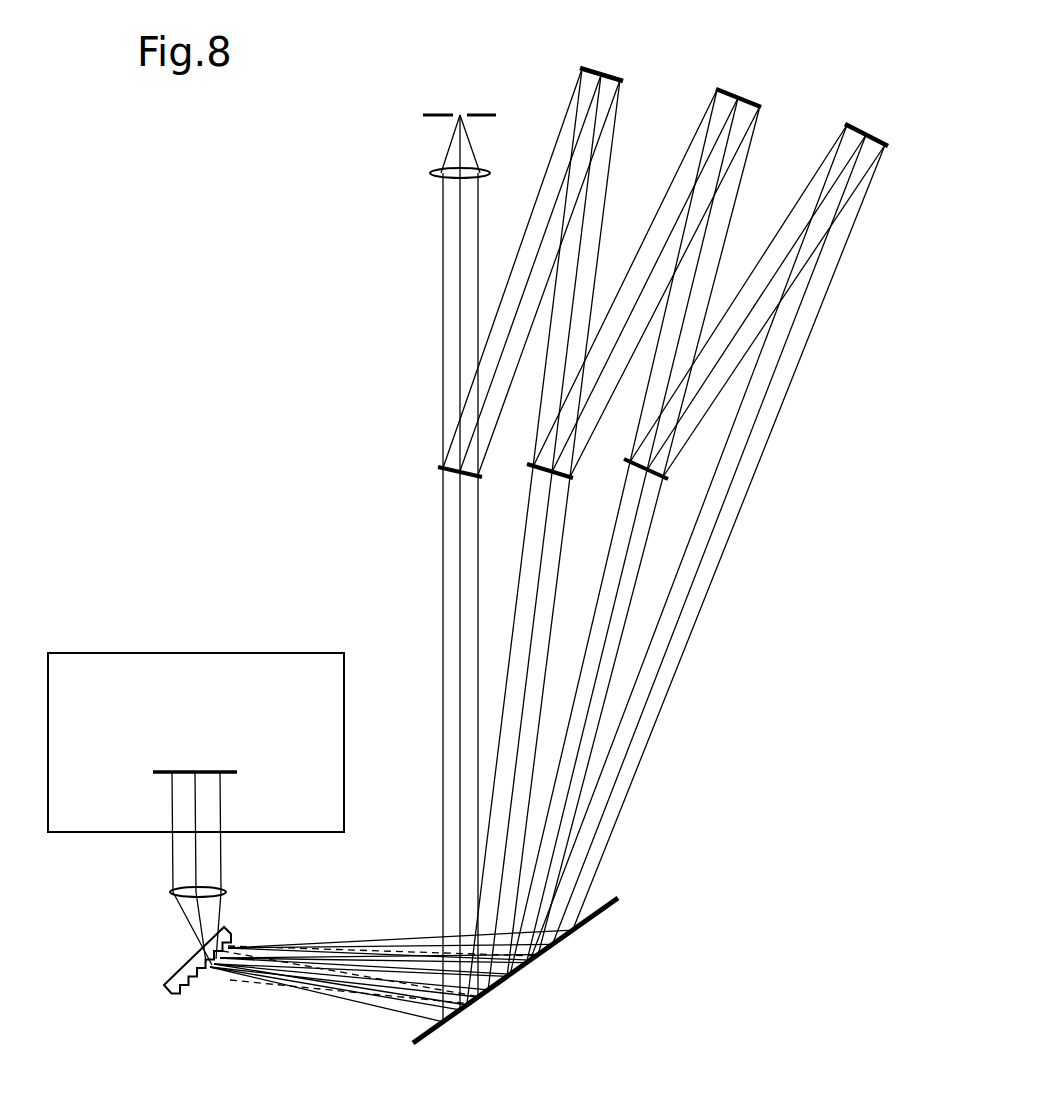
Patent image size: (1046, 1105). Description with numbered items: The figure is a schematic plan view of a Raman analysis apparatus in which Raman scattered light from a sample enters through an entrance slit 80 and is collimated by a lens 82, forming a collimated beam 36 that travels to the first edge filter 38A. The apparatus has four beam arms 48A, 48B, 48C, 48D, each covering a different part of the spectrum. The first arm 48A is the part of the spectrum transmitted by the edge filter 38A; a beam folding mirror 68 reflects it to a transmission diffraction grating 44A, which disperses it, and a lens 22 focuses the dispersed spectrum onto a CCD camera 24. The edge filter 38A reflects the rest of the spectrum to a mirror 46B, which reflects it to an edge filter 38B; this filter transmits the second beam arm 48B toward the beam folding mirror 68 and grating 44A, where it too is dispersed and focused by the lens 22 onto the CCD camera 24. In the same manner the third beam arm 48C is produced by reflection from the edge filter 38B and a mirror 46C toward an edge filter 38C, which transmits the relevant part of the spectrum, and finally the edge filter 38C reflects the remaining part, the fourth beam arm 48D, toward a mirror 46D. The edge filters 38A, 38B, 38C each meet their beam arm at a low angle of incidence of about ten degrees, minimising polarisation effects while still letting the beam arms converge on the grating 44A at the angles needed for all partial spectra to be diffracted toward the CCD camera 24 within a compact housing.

The lens 22 is at (170, 892).
The CCD camera 24 is at (166, 700).
The light beam 36 is at (450, 285).
The edge filter 38A is at (438, 468).
The edge filter 38B is at (528, 465).
The edge filter 38C is at (625, 460).
The transmission diffraction grating 44A is at (166, 988).
The mirror 46B is at (600, 68).
The mirror 46C is at (738, 90).
The mirror 46D is at (858, 125).
The first beam arm 48A is at (452, 537).
The second beam arm 48B is at (524, 615).
The third beam arm 48C is at (615, 635).
The fourth beam arm 48D is at (635, 758).
The beam folding mirror 68 is at (604, 910).
The entrance slit 80 is at (462, 114).
The lens 82 is at (433, 173).